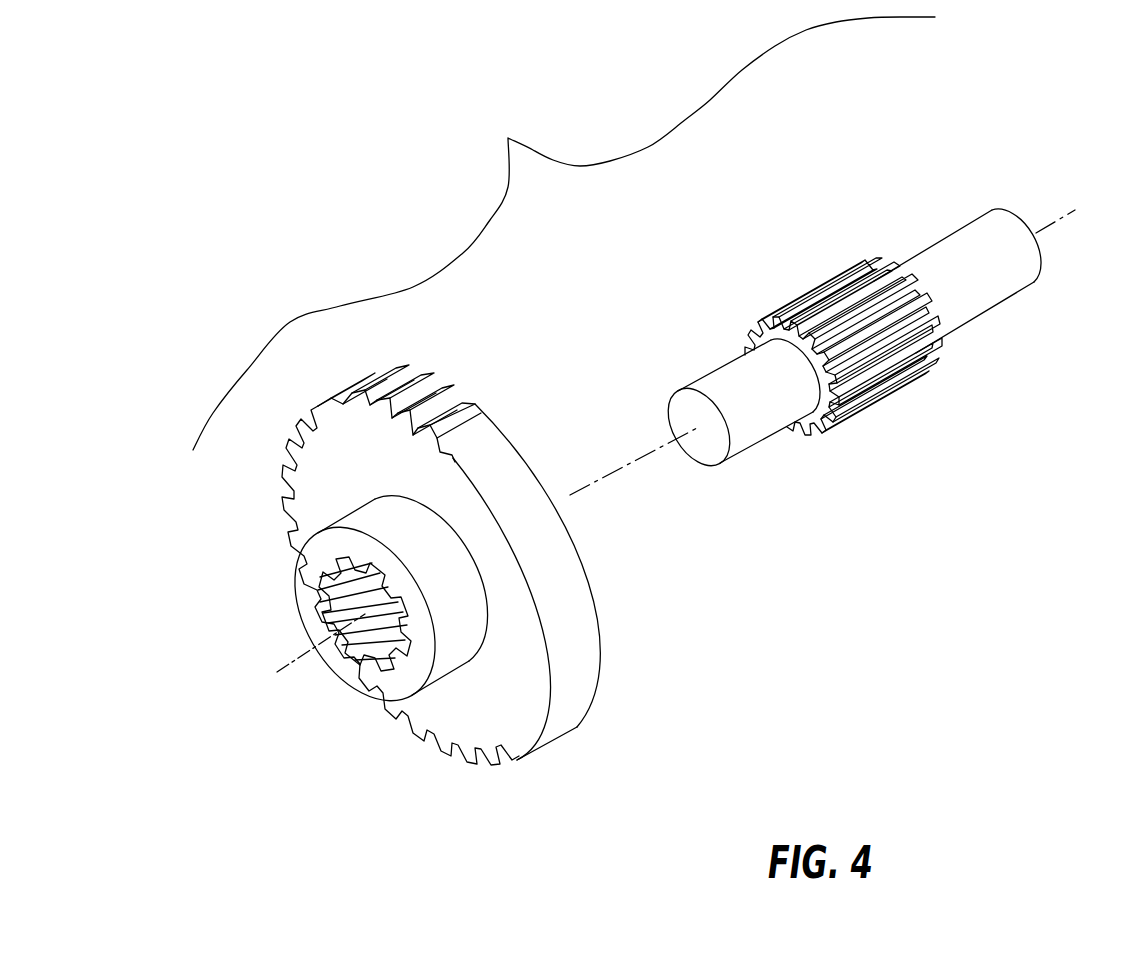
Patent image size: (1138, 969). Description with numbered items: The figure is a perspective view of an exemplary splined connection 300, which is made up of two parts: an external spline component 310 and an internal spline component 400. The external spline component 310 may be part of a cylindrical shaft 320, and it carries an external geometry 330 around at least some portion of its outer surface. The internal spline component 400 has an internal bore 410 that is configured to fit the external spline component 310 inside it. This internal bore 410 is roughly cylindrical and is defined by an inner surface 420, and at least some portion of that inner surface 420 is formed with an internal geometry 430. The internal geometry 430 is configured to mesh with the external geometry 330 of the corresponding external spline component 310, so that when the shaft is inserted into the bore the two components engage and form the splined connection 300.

The splined connection 300 is at (564, 233).
The external spline component 310 is at (853, 324).
The cylindrical shaft 320 is at (975, 303).
The external geometry 330 is at (878, 398).
The internal spline component 400 is at (460, 589).
The internal bore 410 is at (315, 647).
The inner surface 420 is at (328, 600).
The internal geometry 430 is at (352, 660).